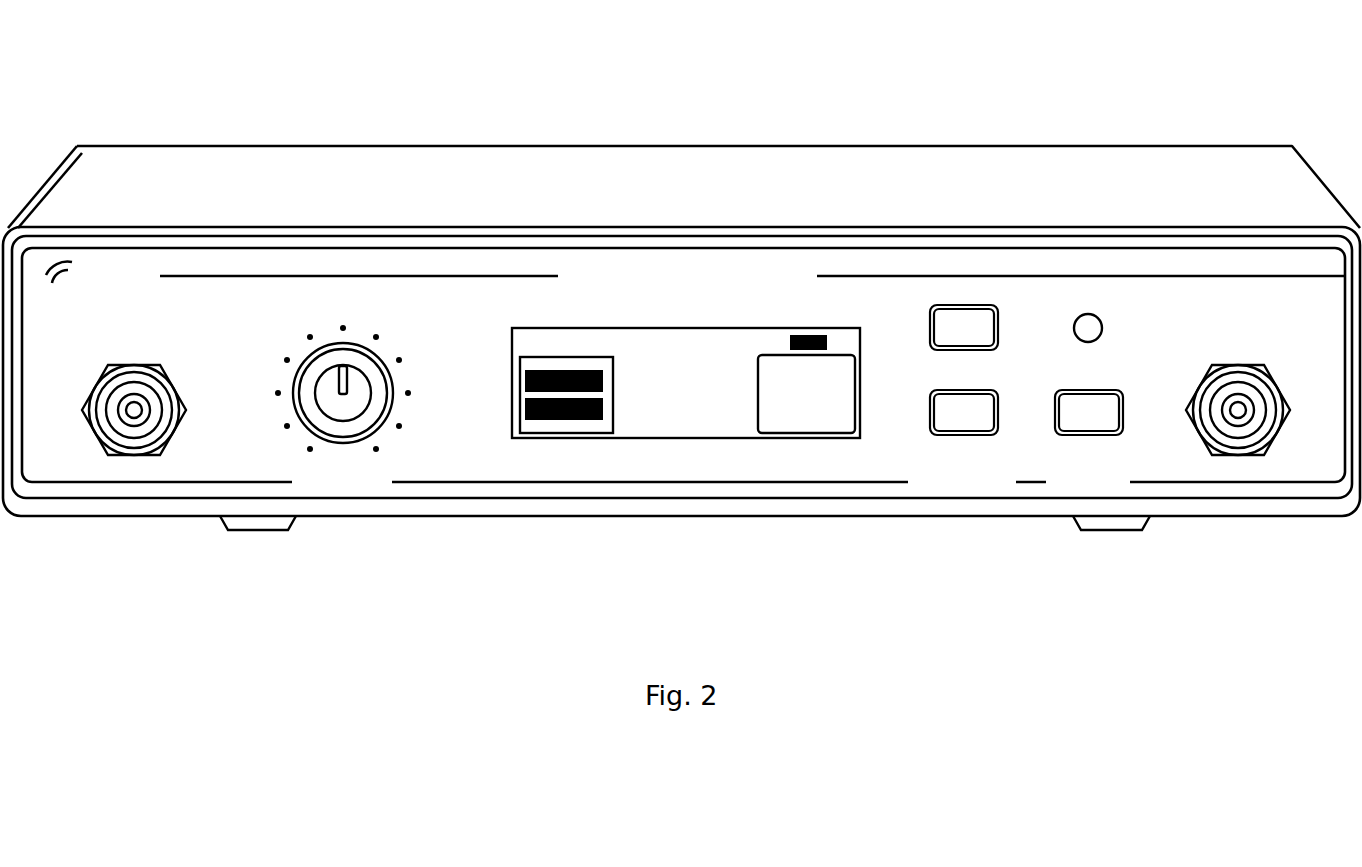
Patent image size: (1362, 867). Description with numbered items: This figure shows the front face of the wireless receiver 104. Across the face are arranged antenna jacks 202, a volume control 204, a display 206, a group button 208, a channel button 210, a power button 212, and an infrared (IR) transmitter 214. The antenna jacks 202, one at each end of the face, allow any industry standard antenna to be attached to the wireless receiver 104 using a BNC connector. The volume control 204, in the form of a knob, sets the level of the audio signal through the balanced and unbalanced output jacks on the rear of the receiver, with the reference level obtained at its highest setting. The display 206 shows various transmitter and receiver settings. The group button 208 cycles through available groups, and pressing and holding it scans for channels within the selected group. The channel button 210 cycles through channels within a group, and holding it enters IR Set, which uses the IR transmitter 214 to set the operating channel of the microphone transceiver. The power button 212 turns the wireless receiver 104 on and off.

The wireless receiver 104 is at (257, 155).
The antenna jacks 202 is at (134, 455).
The volume control 204 is at (343, 443).
The display 206 is at (688, 438).
The group button 208 is at (963, 305).
The channel button 210 is at (963, 435).
The power button 212 is at (1088, 435).
The infrared (IR) transmitter 214 is at (1088, 314).